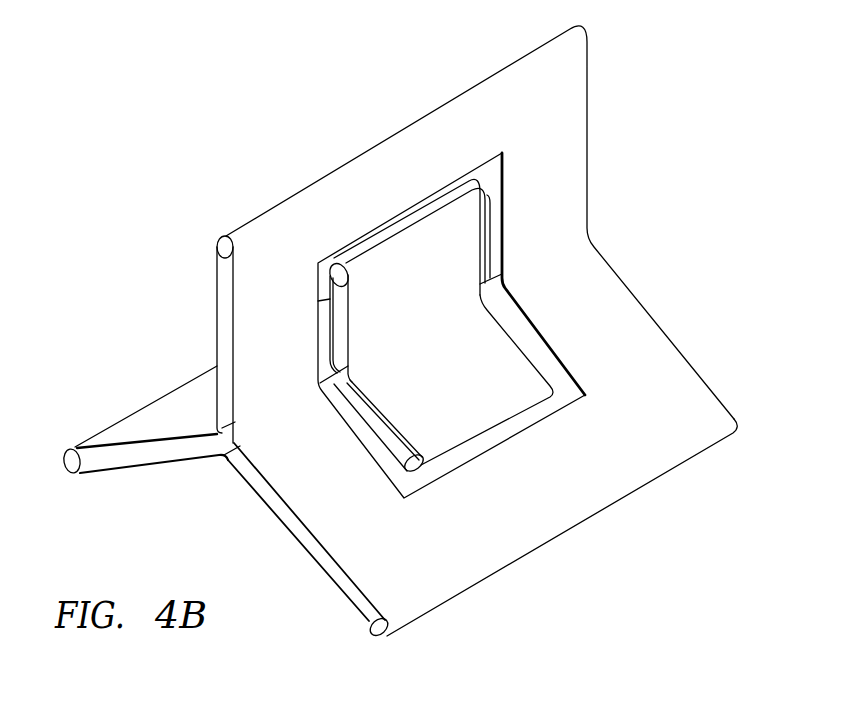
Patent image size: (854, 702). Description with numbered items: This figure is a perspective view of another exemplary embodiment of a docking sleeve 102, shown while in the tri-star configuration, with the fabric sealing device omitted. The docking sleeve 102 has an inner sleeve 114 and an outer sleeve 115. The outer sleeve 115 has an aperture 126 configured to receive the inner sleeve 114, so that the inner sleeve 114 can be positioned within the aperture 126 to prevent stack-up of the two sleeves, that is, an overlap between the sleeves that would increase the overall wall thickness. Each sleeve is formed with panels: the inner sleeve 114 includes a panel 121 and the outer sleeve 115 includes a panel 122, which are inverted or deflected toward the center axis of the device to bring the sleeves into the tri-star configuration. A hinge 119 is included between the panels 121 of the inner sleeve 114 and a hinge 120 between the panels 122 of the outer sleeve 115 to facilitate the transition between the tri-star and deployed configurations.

The docking sleeve 102 is at (240, 127).
The inner sleeve 114 is at (500, 320).
The outer sleeve 115 is at (439, 108).
The hinge 119 is at (418, 480).
The hinge 120 is at (378, 628).
The panel 121 is at (513, 377).
The panel 122 is at (398, 583).
The aperture 126 is at (554, 418).